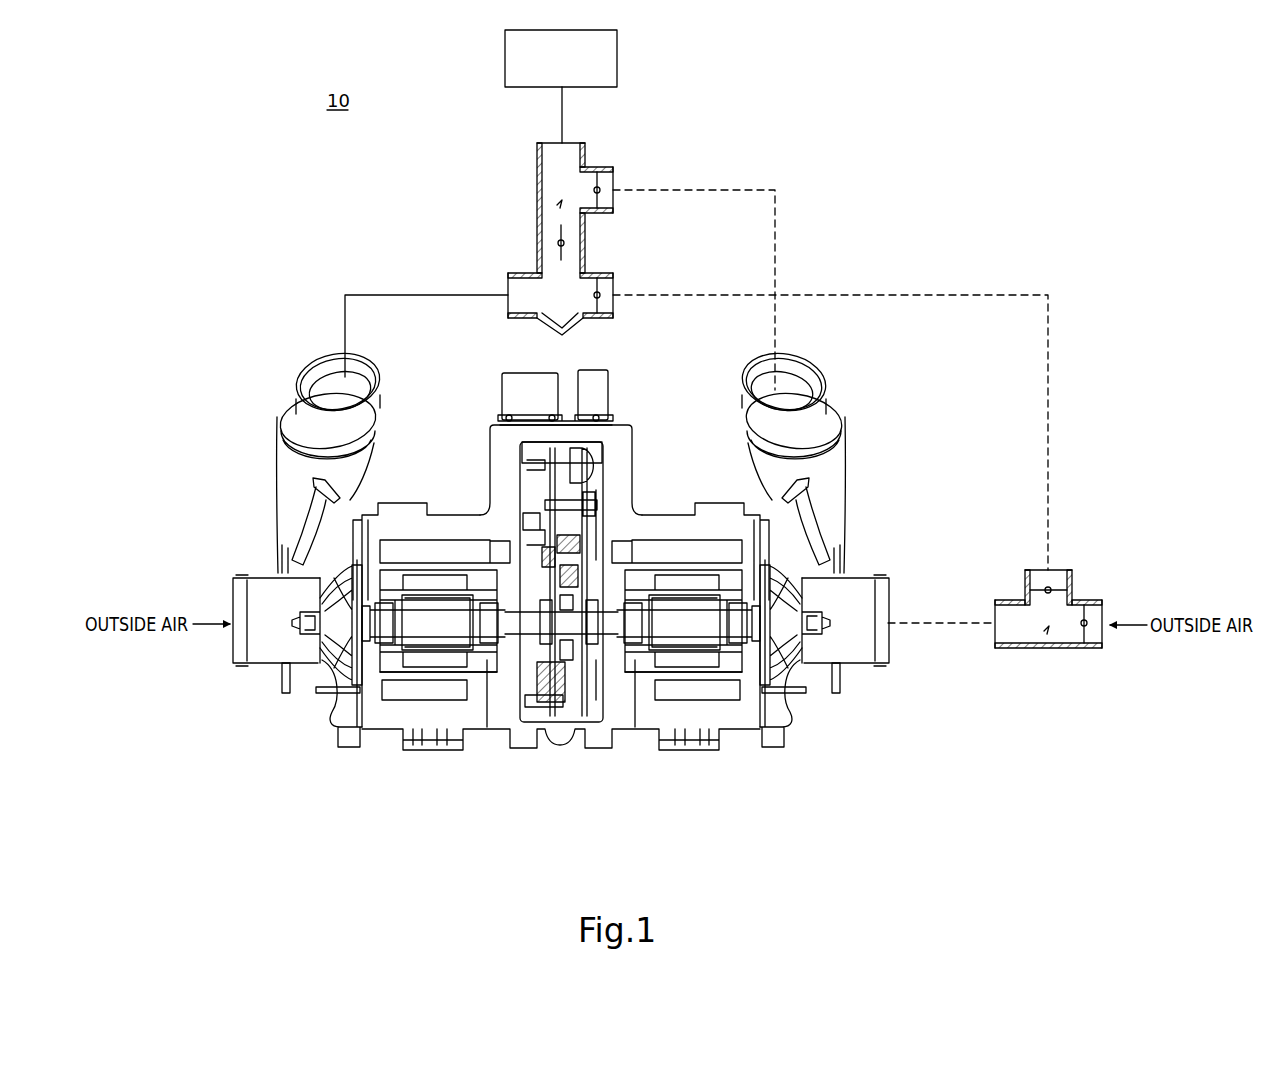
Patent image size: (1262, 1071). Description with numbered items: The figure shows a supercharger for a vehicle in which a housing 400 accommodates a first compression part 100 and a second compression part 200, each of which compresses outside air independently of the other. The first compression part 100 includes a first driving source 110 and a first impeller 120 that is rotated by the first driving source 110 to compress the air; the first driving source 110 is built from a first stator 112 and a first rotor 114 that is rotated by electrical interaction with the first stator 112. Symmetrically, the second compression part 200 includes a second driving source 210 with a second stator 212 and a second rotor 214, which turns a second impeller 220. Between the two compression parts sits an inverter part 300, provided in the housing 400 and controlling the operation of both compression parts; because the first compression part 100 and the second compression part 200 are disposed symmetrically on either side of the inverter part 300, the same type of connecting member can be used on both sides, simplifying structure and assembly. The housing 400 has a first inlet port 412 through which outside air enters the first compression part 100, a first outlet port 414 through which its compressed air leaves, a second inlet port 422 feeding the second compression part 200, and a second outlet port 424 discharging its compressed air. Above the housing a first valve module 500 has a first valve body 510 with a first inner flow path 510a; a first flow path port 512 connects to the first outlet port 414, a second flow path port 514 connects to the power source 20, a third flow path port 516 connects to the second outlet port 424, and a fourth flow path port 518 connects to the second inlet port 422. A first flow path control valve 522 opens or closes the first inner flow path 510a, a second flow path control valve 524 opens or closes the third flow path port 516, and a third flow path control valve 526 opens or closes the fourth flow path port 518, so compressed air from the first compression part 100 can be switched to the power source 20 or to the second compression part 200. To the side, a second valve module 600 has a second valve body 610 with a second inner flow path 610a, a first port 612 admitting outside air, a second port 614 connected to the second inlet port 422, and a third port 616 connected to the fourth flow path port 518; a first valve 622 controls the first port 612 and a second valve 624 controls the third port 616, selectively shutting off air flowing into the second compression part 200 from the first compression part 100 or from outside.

The power source 20 is at (618, 57).
The first compression part 100 is at (401, 643).
The first driving source 110 is at (433, 692).
The first stator 112 is at (455, 662).
The first rotor 114 is at (430, 630).
The first impeller 120 is at (345, 660).
The second compression part 200 is at (721, 643).
The second driving source 210 is at (688, 692).
The second stator 212 is at (702, 662).
The second rotor 214 is at (680, 630).
The second impeller 220 is at (778, 660).
The inverter part 300 is at (568, 708).
The housing 400 is at (563, 530).
The first inlet port 412 is at (245, 647).
The first outlet port 414 is at (315, 366).
The second inlet port 422 is at (880, 647).
The second outlet port 424 is at (807, 366).
The first valve module 500 is at (564, 219).
The first valve body 510 is at (564, 219).
The first inner flow path 510a is at (558, 203).
The first flow path port 512 is at (508, 285).
The second flow path port 514 is at (572, 143).
The third flow path port 516 is at (613, 180).
The fourth flow path port 518 is at (613, 285).
The first flow path control valve 522 is at (558, 230).
The second flow path control valve 524 is at (600, 192).
The third flow path control valve 526 is at (600, 298).
The second valve module 600 is at (1050, 596).
The second valve body 610 is at (1050, 604).
The second inner flow path 610a is at (1048, 634).
The first port 612 is at (1102, 640).
The second port 614 is at (995, 640).
The third port 616 is at (1058, 568).
The first valve 622 is at (1090, 612).
The second valve 624 is at (1042, 588).